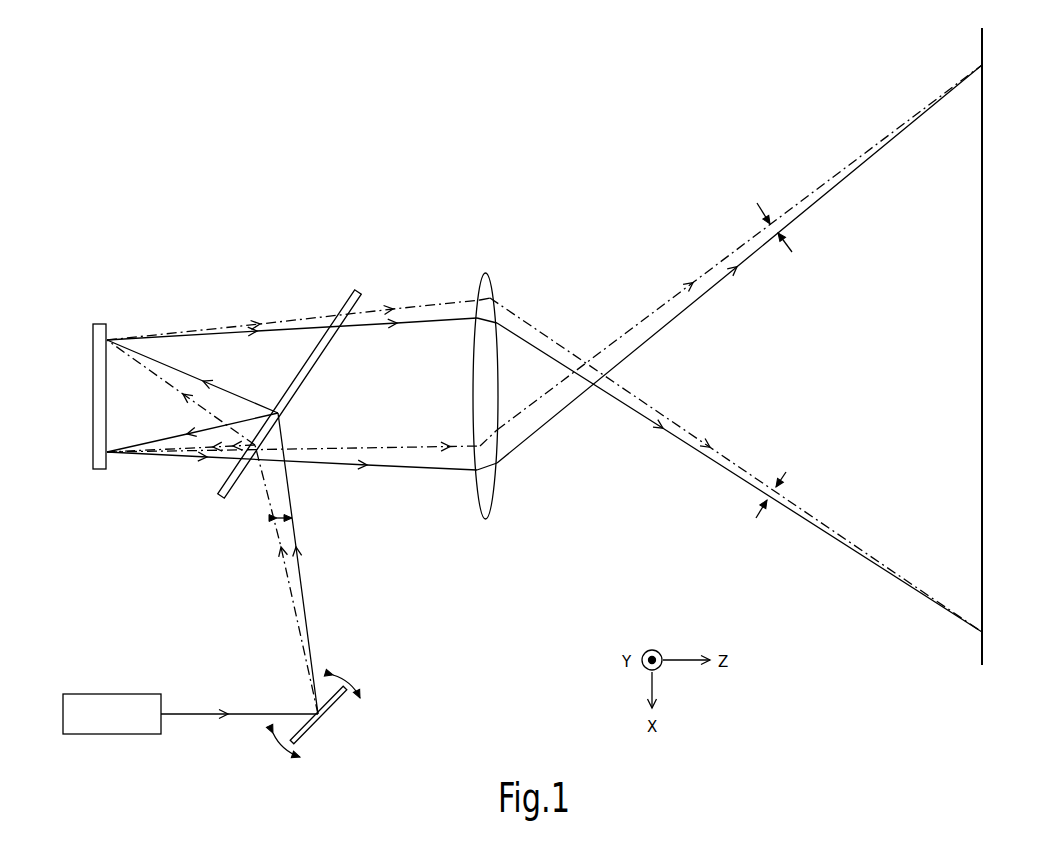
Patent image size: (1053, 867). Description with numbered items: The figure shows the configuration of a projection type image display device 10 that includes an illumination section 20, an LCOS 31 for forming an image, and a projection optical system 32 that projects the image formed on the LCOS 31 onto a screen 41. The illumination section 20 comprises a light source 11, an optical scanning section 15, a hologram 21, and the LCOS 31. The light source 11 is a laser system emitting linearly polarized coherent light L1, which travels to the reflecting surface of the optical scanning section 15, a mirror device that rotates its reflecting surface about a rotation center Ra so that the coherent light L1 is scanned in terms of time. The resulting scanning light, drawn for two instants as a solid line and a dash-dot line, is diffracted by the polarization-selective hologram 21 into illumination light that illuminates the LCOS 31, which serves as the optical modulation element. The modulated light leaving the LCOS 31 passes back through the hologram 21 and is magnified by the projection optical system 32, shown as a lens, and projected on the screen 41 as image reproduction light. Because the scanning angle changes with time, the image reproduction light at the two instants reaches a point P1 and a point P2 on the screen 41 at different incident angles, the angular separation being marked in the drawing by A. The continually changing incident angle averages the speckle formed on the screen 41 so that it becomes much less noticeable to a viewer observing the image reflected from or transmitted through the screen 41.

The projection type image display device 10 is at (437, 142).
The light source 11 is at (110, 693).
The optical scanning section 15 is at (302, 740).
The illumination section 20 is at (278, 282).
The hologram 21 is at (220, 500).
The LCOS 31 is at (103, 472).
The projection optical system 32 is at (487, 518).
The screen 41 is at (983, 422).
The coherent light L1 is at (192, 712).
The rotation center Ra is at (322, 718).
The beam displacement A is at (767, 360).
The point P1 on the screen P1 is at (999, 638).
The point P2 on the screen P2 is at (999, 65).